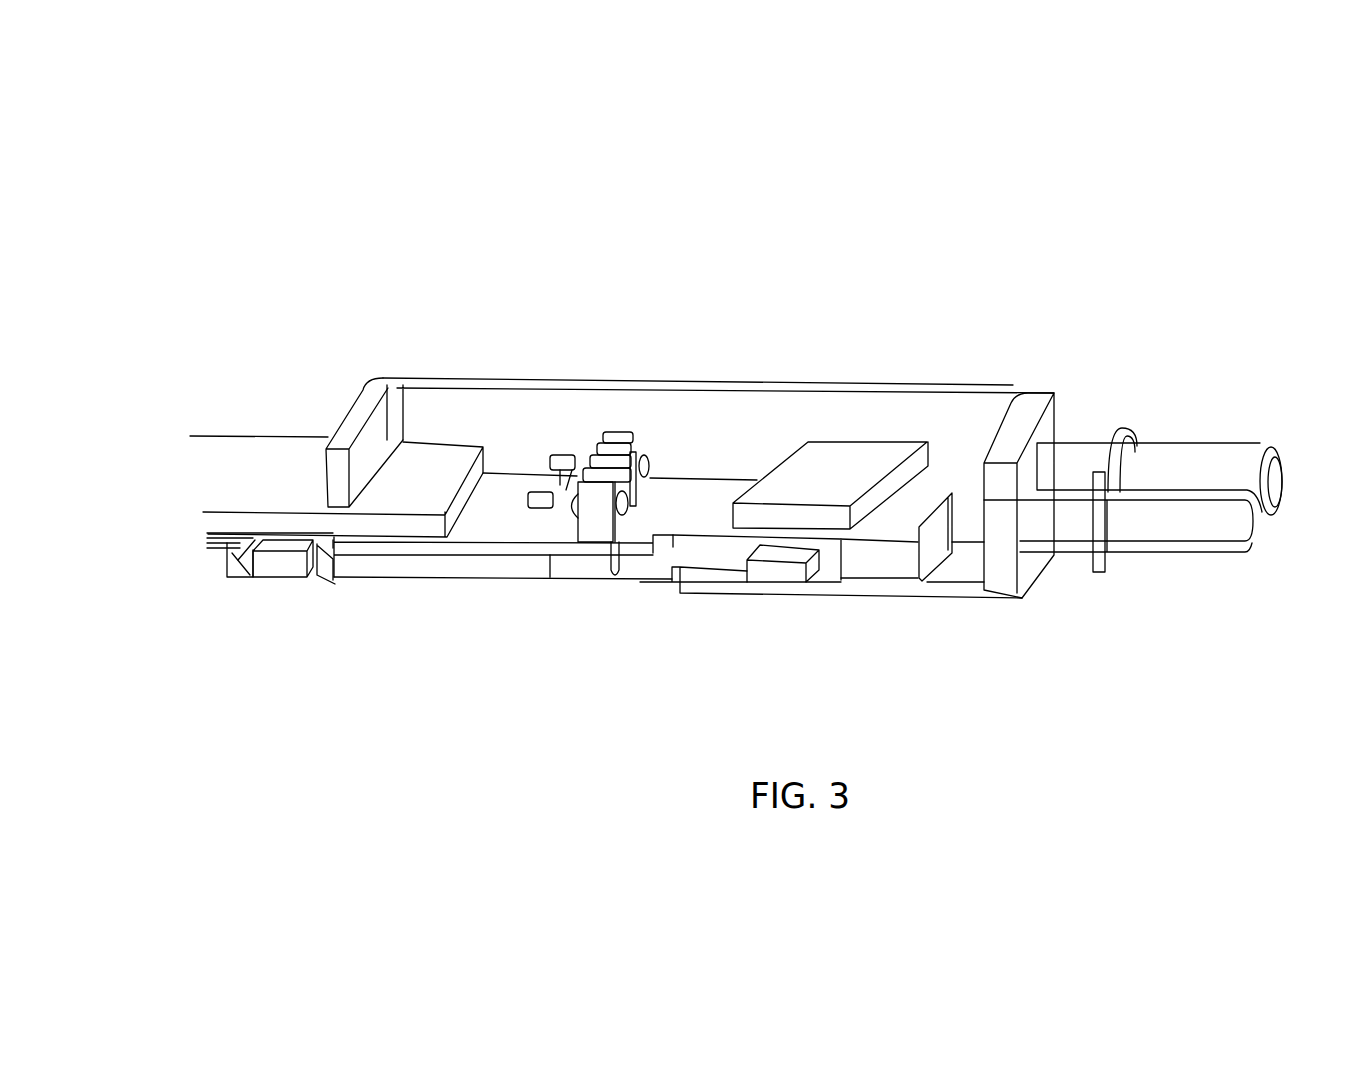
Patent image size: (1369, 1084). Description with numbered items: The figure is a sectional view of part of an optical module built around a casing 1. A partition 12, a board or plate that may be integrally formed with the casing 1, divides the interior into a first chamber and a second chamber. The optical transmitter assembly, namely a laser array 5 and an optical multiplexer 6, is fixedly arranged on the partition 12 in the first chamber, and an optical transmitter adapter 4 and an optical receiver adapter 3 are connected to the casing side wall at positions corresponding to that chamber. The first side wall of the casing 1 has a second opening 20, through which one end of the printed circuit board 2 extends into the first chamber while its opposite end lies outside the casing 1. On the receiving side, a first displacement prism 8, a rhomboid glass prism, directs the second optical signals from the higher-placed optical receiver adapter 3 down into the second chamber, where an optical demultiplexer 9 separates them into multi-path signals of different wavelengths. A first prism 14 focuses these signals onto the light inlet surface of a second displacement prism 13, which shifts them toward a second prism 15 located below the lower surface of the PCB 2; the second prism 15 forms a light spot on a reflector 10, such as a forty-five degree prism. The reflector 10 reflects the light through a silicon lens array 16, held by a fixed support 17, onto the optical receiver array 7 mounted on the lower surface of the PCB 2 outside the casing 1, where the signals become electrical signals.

The casing 1 is at (1027, 398).
The printed circuit board 2 is at (265, 478).
The optical receiver adapter 3 is at (1152, 523).
The optical transmitter adapter 4 is at (1168, 463).
The laser array 5 is at (543, 492).
The optical multiplexer 6 is at (825, 482).
The optical receiver array 7 is at (232, 536).
The first displacement prism 8 is at (928, 552).
The optical demultiplexer 9 is at (758, 573).
The reflector 10 is at (237, 567).
The partition 12 is at (422, 548).
The second displacement prism 13 is at (333, 580).
The first prism 14 is at (573, 563).
The second prism 15 is at (280, 563).
The silicon lens array 16 is at (236, 553).
The fixed support 17 is at (232, 543).
The second opening 20 is at (385, 442).